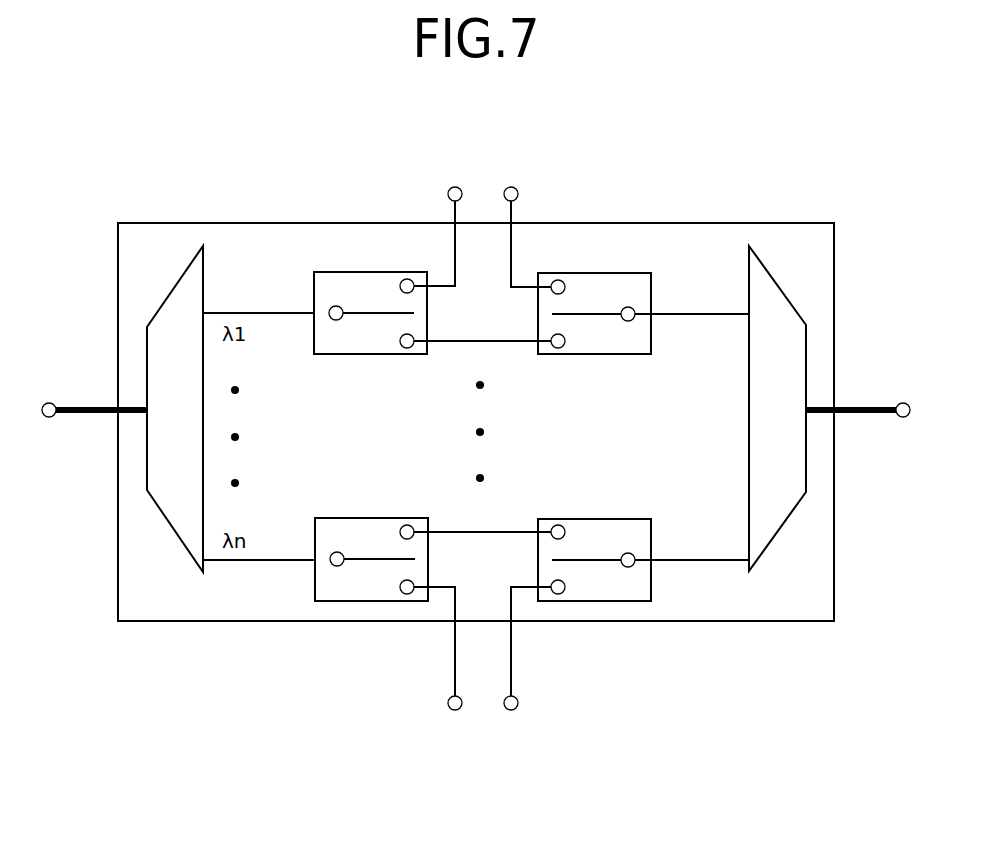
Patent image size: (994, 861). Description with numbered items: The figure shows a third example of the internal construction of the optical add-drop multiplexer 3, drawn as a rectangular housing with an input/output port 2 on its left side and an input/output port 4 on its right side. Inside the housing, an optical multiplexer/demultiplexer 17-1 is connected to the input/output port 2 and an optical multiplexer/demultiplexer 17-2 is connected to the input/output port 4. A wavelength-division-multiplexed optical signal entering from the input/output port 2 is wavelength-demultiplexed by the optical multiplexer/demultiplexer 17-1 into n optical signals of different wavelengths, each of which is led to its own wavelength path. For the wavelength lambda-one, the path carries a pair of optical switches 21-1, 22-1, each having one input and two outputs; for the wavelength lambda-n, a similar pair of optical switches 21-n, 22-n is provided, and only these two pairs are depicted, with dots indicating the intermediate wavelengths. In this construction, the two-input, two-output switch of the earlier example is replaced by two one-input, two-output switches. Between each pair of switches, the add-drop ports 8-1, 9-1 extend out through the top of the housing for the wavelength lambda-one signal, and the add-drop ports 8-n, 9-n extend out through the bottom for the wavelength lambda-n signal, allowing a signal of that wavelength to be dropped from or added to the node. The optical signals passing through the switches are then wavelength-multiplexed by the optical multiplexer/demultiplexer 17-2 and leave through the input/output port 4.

The input/output port 2 is at (49, 403).
The optical add-drop multiplexer 3 is at (701, 223).
The input/output port 4 is at (905, 403).
The optical multiplexer/demultiplexer 17-1 is at (170, 528).
The optical multiplexer/demultiplexer 17-2 is at (782, 525).
The optical switch 21-1 is at (372, 355).
The optical switch 21-n is at (372, 518).
The optical switch 22-1 is at (596, 355).
The optical switch 22-n is at (590, 518).
The add-drop port 8-1 is at (453, 187).
The add-drop port 8-n is at (455, 710).
The add-drop port 9-1 is at (513, 187).
The add-drop port 9-n is at (511, 710).